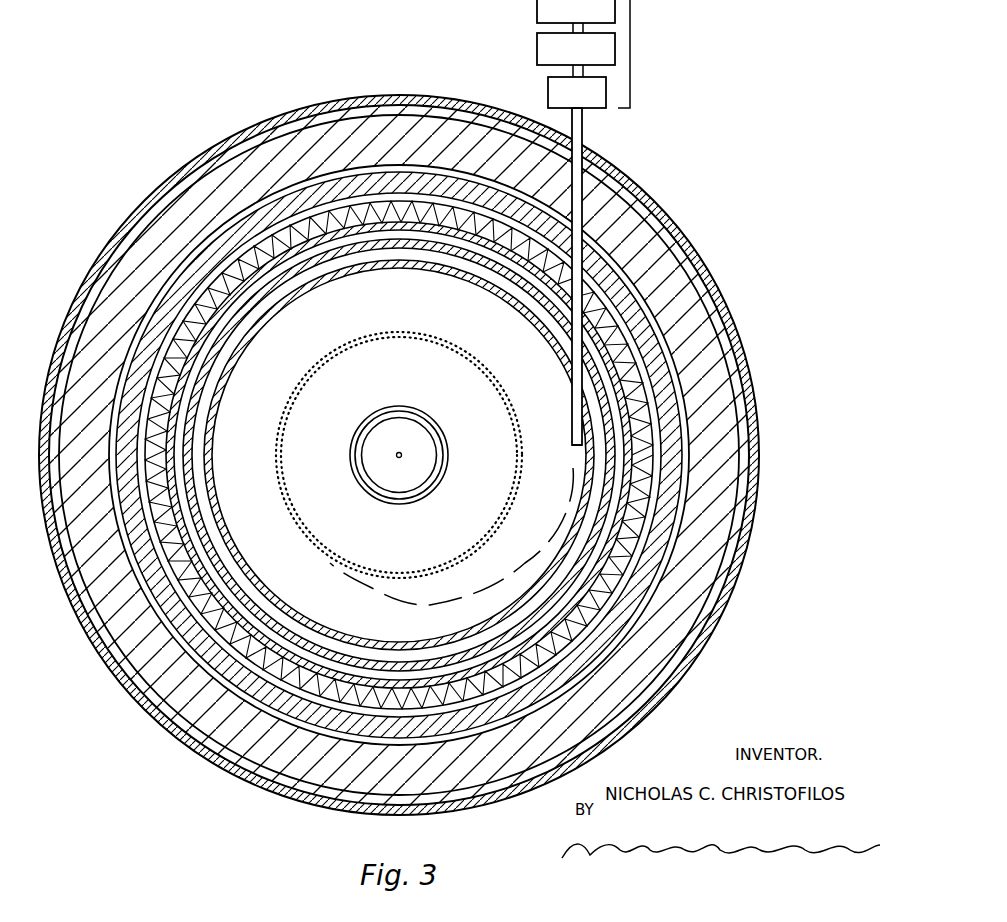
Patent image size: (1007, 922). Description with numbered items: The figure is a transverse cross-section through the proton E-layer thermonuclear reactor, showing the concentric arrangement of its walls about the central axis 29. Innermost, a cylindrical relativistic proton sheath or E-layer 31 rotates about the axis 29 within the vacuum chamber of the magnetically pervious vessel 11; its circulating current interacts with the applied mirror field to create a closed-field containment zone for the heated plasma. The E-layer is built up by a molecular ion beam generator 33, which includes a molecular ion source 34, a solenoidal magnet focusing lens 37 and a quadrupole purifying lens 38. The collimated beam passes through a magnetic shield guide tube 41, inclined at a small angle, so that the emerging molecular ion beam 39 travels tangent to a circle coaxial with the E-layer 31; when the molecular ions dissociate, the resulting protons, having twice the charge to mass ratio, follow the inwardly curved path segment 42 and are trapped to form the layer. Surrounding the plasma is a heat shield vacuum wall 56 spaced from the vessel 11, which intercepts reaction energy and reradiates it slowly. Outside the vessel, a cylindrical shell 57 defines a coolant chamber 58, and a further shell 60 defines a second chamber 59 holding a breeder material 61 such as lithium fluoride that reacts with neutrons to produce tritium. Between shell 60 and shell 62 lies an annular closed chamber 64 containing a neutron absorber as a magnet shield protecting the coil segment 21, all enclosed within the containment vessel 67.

The vessel 11 is at (372, 660).
The coil segment 21 is at (630, 680).
The axis 29 is at (398, 457).
The E-layer 31 is at (320, 367).
The molecular ion beam generator 33 is at (632, 52).
The molecular ion source 34 is at (589, 16).
The solenoidal magnet focusing lens 37 is at (589, 60).
The quadrupole purifying lens 38 is at (589, 103).
The molecular ion beam 39 is at (574, 449).
The magnetic shield guide tube 41 is at (585, 123).
The path segment 42 is at (448, 603).
The heat shield vacuum wall 56 is at (213, 413).
The cylindrical shell 57 is at (250, 612).
The chamber 58 is at (317, 647).
The second chamber 59 is at (427, 680).
The shell 60 is at (672, 510).
The breeder material 61 is at (633, 558).
The shell 62 is at (630, 617).
The annular closed chamber 64 is at (143, 538).
The containment vessel 67 is at (648, 198).